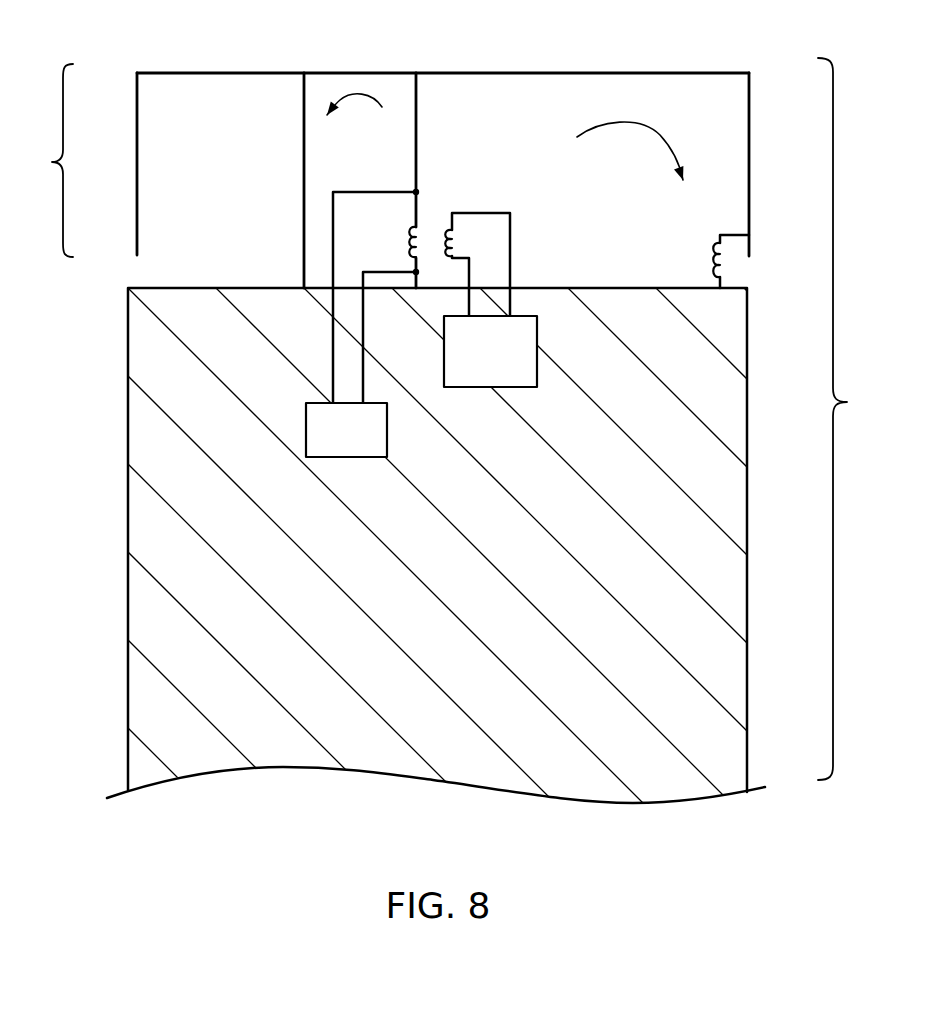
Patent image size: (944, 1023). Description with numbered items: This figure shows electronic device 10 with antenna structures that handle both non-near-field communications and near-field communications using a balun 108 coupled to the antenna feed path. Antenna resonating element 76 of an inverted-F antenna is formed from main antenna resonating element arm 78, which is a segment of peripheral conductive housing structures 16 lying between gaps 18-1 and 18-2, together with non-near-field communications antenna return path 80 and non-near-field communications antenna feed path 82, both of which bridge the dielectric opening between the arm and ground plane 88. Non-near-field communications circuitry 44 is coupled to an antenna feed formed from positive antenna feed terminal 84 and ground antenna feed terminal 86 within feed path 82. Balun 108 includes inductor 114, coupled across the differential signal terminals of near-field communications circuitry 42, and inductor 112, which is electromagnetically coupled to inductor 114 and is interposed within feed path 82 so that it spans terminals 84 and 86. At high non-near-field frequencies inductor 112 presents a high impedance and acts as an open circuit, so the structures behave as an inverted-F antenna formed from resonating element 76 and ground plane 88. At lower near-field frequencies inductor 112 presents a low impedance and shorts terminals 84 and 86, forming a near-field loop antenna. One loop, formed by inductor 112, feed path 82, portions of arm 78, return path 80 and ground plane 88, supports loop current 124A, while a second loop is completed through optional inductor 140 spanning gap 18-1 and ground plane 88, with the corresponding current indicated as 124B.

The electronic device 10 is at (847, 419).
The peripheral conductive housing structures 16 is at (673, 50).
The gap 18-1 is at (757, 273).
The gap 18-2 is at (120, 267).
The near-field communications circuitry 42 is at (497, 388).
The non-near-field communications circuitry 44 is at (350, 458).
The antenna resonating element 76 is at (49, 160).
The main antenna resonating element arm 78 is at (528, 72).
The non-near-field communications antenna return path 80 is at (302, 160).
The non-near-field communications antenna feed path 82 is at (433, 130).
The positive antenna feed terminal 84 is at (415, 192).
The ground antenna feed terminal 86 is at (417, 275).
The ground plane 88 is at (135, 436).
The balun 108 is at (484, 229).
The inductor 112 is at (412, 248).
The inductor 114 is at (448, 240).
The loop current 124A is at (357, 95).
The antenna current path 124B is at (621, 122).
The optional inductor 140 is at (697, 263).